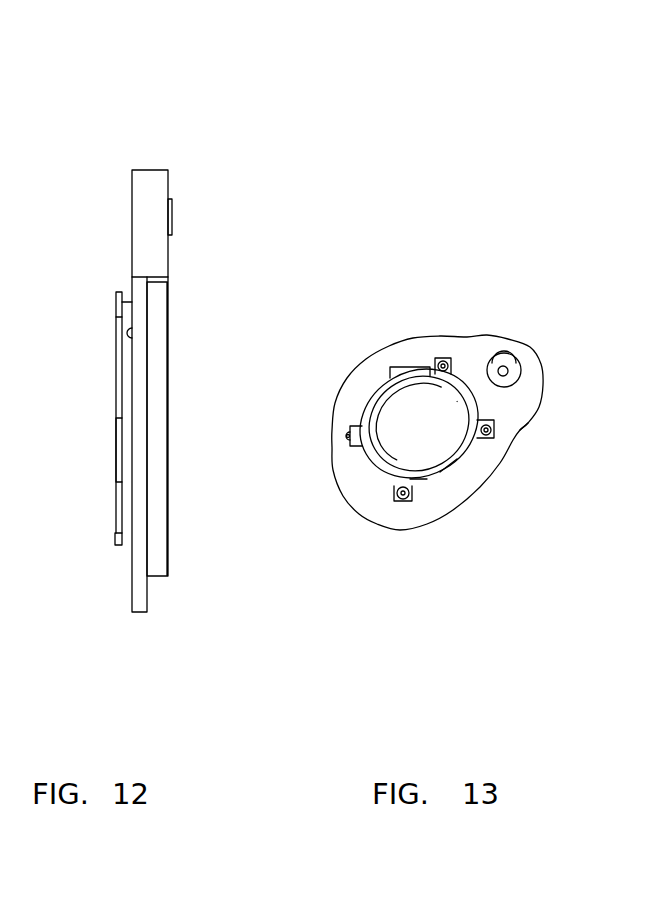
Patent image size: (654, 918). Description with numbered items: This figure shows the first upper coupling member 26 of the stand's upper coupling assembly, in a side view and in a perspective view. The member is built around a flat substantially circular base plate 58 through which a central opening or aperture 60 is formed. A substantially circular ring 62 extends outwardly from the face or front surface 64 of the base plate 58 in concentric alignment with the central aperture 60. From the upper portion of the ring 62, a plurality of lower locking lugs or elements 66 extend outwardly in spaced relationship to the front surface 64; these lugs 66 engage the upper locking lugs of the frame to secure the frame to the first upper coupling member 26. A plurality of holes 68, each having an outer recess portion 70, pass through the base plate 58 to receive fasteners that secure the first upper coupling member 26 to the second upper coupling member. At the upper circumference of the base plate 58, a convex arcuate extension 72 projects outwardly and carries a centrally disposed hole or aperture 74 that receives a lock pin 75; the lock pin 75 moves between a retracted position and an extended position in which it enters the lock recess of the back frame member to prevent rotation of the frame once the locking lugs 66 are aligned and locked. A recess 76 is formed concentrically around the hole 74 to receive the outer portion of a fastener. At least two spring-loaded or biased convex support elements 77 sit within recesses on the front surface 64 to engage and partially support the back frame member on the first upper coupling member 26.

In FIG. 12, the first upper coupling member 26 is at (196, 162).
In FIG. 12, the flat substantially circular base plate 58 is at (138, 596).
In FIG. 13, the flat substantially circular base plate 58 is at (488, 493).
In FIG. 13, the central opening or aperture 60 is at (420, 415).
In FIG. 12, the substantially circular ring 62 is at (116, 385).
In FIG. 13, the substantially circular ring 62 is at (463, 453).
In FIG. 12, the face or front surface 64 is at (131, 277).
In FIG. 13, the face or front surface 64 is at (460, 487).
In FIG. 12, the lower locking lugs or elements 66 is at (116, 301).
In FIG. 13, the lower locking lugs or elements 66 is at (400, 367).
In FIG. 13, the holes 68 is at (445, 358).
In FIG. 13, the outer recess portion 70 is at (435, 358).
In FIG. 12, the convex arcuate extension 72 is at (155, 167).
In FIG. 13, the convex arcuate extension 72 is at (540, 382).
In FIG. 13, the centrally disposed hole or aperture 74 is at (505, 365).
In FIG. 12, the lock pin 75 is at (172, 215).
In FIG. 13, the recess 76 is at (517, 357).
In FIG. 12, the spring-loaded or biased convex support elements 77 is at (127, 333).